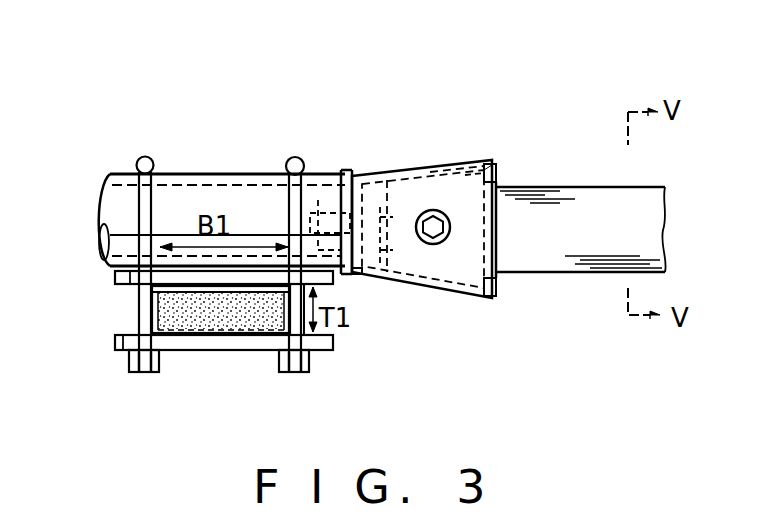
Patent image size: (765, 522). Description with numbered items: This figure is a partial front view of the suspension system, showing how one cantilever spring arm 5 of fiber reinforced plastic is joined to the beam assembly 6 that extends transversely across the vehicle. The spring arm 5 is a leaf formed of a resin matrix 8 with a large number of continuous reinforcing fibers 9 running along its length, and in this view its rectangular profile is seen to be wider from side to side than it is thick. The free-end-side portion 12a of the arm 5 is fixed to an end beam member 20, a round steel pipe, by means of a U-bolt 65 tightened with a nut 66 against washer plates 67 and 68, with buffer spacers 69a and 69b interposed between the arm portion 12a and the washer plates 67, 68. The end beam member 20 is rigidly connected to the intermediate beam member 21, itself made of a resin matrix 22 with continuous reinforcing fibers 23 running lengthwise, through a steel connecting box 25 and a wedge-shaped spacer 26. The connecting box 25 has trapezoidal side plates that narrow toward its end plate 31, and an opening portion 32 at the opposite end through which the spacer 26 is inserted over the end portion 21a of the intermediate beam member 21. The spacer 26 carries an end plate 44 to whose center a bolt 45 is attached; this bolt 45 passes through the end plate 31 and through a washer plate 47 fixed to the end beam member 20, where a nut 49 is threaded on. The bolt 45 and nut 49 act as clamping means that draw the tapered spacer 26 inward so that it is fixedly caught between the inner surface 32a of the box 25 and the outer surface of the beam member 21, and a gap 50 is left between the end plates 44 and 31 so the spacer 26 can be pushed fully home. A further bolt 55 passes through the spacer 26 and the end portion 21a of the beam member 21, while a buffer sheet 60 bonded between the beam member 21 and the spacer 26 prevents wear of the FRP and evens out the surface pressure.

The cantilever spring arm 5 is at (190, 338).
The beam assembly 6 is at (648, 185).
The resin matrix 8 is at (256, 338).
The continuous reinforcing fibers 9 is at (272, 350).
The free-end-side portion 12a is at (230, 318).
The end beam member 20 is at (182, 175).
The intermediate beam member 21 is at (595, 197).
The end portion of intermediate beam member 21a is at (474, 168).
The resin matrix 22 is at (648, 232).
The continuous reinforcing fibers 23 is at (665, 270).
The connecting box 25 is at (418, 168).
The wedge-shaped spacer 26 is at (496, 165).
The end plate of connecting box 31 is at (350, 172).
The opening portion 32 is at (499, 178).
The inner surface of connecting box 32a is at (438, 168).
The end plate of wedge-shaped spacer 44 is at (376, 176).
The bolt 45 is at (358, 280).
The washer plate 47 is at (342, 184).
The nut 49 is at (330, 205).
The gap 50 is at (385, 278).
The bolt 55 is at (443, 243).
The buffer sheet 60 is at (494, 172).
The U-bolt 65 is at (135, 198).
The nut 66 is at (135, 362).
The washer plate 67 is at (117, 280).
The washer plate 68 is at (115, 343).
The buffer spacer 69a is at (160, 296).
The buffer spacer 69b is at (160, 326).